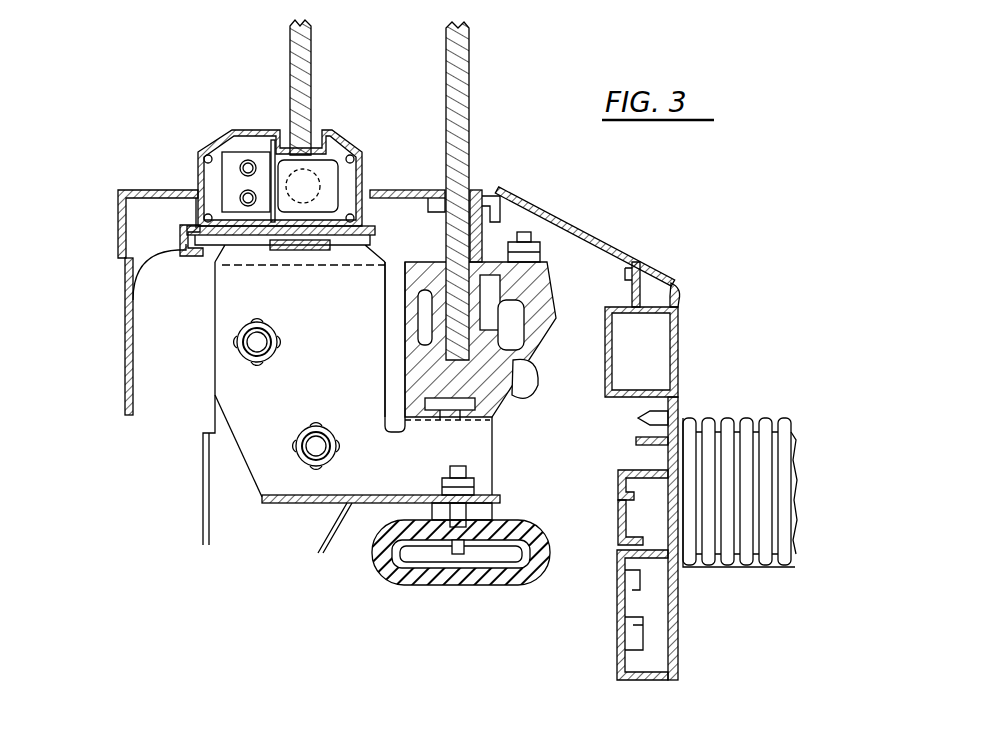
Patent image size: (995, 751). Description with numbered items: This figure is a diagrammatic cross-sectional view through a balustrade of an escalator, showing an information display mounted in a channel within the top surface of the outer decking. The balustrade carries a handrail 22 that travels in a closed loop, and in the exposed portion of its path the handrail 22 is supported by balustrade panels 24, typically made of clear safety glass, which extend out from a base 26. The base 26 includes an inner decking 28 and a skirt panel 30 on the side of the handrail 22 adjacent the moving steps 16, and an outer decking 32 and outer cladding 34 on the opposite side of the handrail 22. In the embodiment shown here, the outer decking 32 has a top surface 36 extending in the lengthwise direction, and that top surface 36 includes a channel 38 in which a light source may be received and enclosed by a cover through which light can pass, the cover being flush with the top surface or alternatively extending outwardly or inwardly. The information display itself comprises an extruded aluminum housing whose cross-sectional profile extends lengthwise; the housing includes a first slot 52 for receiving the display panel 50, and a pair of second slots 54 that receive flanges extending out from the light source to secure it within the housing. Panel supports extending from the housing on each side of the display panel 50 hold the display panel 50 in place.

The steps 16 is at (727, 418).
The handrail 22 is at (455, 587).
The balustrade panels 24 is at (471, 118).
The base 26 is at (562, 208).
The inner decking 28 is at (627, 262).
The skirt panel 30 is at (652, 500).
The outer decking 32 is at (147, 186).
The outer cladding 34 is at (125, 339).
The top surface 36 is at (388, 190).
The channel 38 is at (186, 212).
The display panel 50 is at (289, 50).
The first slot 52 is at (313, 147).
The second slots 54 is at (258, 143).